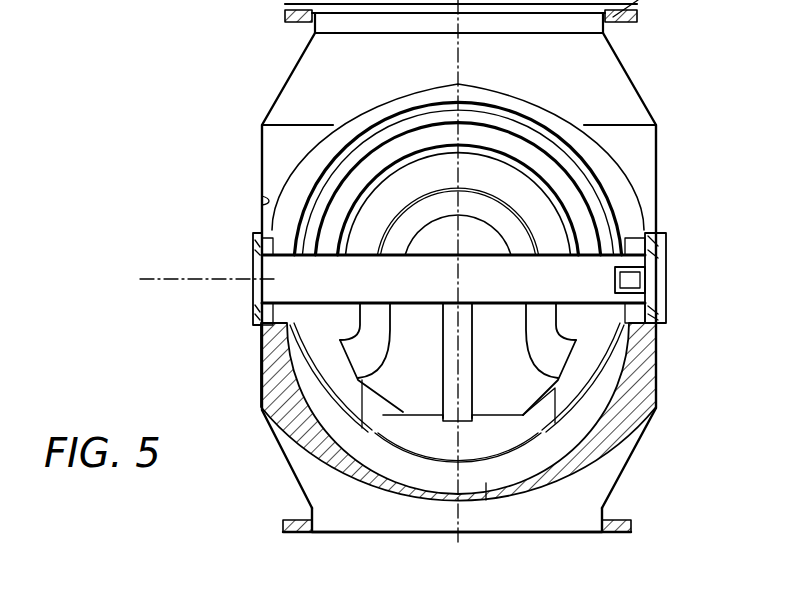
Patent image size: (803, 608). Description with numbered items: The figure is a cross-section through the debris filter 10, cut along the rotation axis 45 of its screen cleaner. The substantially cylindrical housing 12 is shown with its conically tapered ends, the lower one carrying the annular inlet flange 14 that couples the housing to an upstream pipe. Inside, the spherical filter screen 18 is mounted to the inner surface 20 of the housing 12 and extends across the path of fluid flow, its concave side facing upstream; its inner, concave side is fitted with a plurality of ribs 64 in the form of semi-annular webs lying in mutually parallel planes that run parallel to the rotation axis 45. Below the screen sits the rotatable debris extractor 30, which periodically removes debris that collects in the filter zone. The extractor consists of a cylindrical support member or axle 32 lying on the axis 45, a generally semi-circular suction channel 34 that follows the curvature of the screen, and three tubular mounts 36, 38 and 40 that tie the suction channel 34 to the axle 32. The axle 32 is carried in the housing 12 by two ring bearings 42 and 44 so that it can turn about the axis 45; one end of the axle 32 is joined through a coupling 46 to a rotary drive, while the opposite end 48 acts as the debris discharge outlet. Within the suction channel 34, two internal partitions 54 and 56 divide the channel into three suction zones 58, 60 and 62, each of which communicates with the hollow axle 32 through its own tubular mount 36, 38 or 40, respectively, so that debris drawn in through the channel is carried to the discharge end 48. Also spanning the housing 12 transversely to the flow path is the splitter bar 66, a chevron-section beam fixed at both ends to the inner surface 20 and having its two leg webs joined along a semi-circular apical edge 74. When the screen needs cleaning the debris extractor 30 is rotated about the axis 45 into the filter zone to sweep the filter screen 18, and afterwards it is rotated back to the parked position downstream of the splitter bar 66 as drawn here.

The debris filter 10 is at (217, 83).
The housing 12 is at (262, 152).
The inlet flange 14 is at (290, 528).
The filter screen 18 is at (593, 173).
The inner surface 20 is at (262, 195).
The debris extractor 30 is at (320, 386).
The support member or axle 32 is at (585, 258).
The suction channel 34 is at (533, 433).
The tubular mount 36 is at (350, 352).
The tubular mount 38 is at (446, 421).
The tubular mount 40 is at (557, 352).
The ring bearing 42 is at (253, 244).
The ring bearing 44 is at (666, 317).
The axis 45 is at (212, 281).
The coupling 46 is at (666, 275).
The opposite end 48 is at (255, 266).
The partition 54 is at (382, 453).
The partition 56 is at (533, 435).
The suction zone 58 is at (304, 384).
The suction zone 60 is at (424, 444).
The suction zone 62 is at (590, 390).
The ribs 64 is at (505, 127).
The splitter bar 66 is at (309, 440).
The apical edge 74 is at (486, 483).